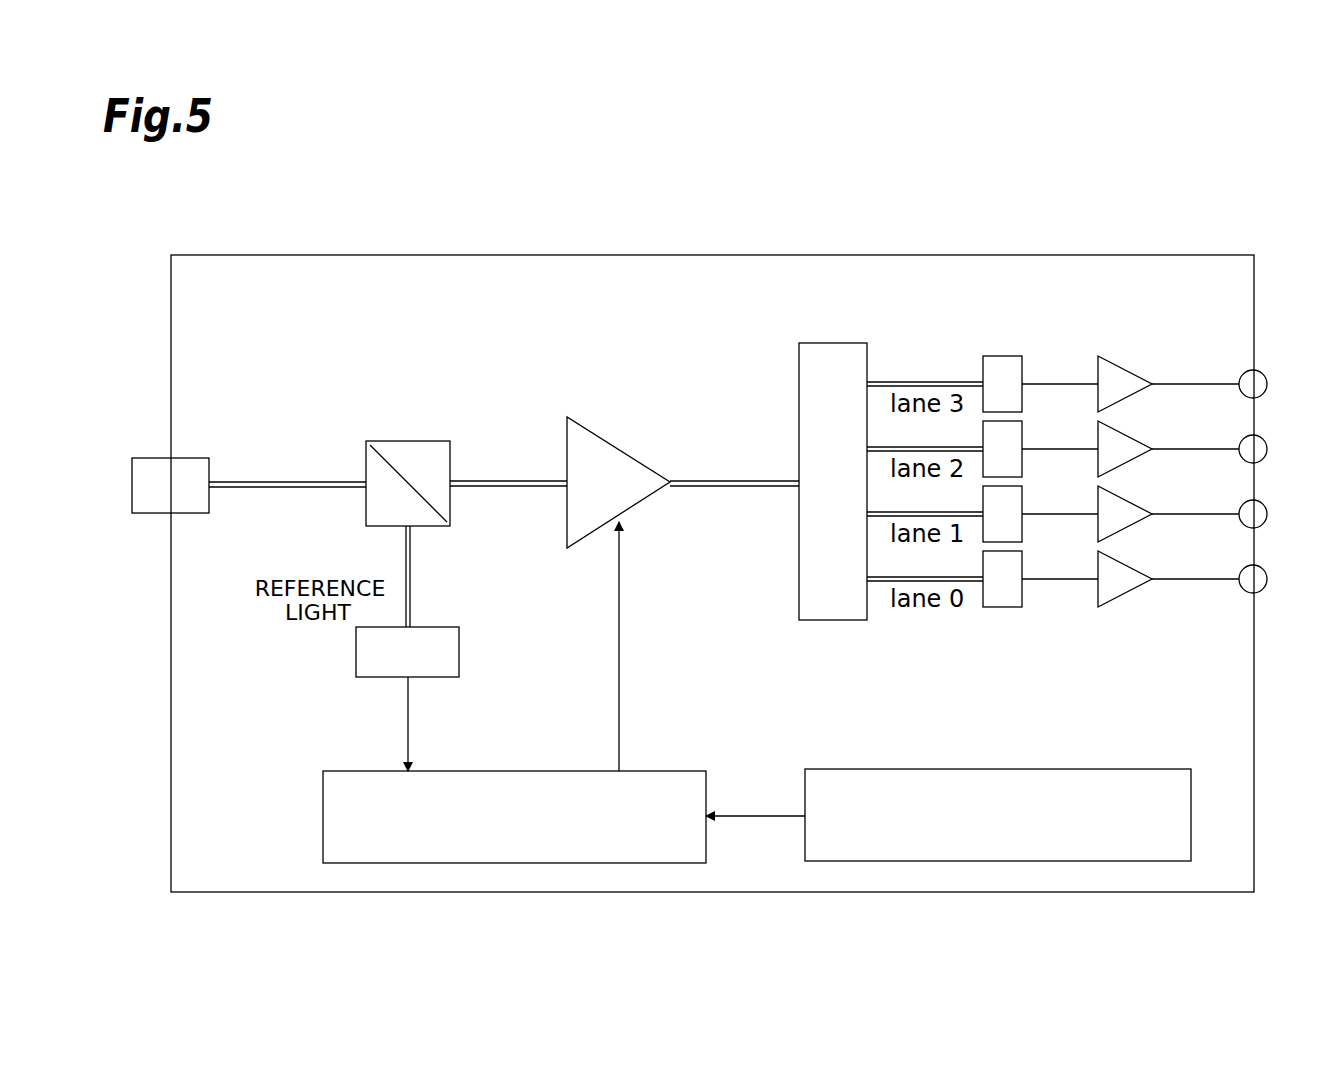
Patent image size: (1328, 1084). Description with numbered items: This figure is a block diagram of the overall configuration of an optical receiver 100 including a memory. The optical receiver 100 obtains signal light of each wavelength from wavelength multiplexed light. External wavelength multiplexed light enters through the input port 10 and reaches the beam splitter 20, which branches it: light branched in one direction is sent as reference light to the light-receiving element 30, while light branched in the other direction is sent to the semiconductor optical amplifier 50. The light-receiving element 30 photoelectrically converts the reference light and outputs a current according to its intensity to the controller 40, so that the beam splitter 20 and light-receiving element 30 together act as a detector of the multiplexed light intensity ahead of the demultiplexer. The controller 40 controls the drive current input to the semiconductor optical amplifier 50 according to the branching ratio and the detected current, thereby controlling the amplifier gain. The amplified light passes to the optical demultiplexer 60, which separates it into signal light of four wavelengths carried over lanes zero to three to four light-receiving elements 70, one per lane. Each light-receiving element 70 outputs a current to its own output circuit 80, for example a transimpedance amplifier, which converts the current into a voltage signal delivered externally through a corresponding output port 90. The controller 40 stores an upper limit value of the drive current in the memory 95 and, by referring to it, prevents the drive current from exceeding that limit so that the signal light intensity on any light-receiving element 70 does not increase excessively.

The optical receiver 100 is at (1193, 197).
The input port 10 is at (147, 458).
The beam splitter 20 is at (427, 441).
The light-receiving element 30 is at (459, 640).
The controller 40 is at (670, 771).
The semiconductor optical amplifier 50 is at (598, 438).
The optical demultiplexer 60 is at (840, 343).
The light-receiving element 70 is at (1002, 356).
The output circuit 80 is at (1130, 368).
The output port 90 is at (1263, 372).
The memory 95 is at (1148, 769).